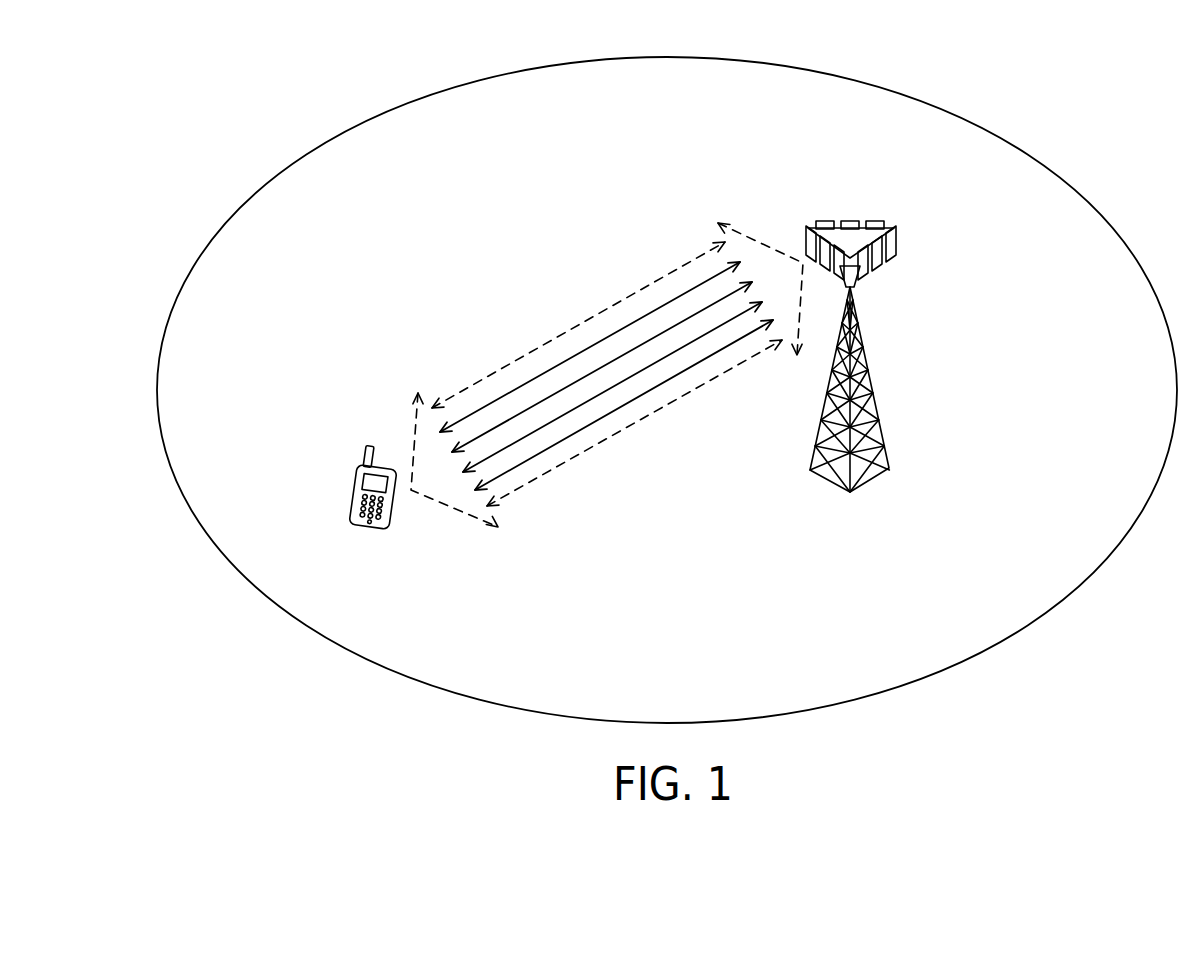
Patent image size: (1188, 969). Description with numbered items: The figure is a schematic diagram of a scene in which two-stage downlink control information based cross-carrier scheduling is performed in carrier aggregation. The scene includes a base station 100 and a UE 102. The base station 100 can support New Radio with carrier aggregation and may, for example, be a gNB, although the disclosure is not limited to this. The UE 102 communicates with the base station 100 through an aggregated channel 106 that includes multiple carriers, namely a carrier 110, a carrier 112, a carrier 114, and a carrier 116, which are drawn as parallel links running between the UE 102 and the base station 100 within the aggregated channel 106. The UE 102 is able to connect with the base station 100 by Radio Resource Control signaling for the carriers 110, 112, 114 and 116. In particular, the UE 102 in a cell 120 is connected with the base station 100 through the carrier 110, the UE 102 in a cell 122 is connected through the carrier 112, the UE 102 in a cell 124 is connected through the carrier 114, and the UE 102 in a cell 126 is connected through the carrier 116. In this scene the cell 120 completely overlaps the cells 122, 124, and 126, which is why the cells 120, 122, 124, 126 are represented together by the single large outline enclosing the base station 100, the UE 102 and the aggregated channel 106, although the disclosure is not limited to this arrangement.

The base station 100 is at (850, 222).
The UE 102 is at (352, 492).
The aggregated channel 106 is at (470, 388).
The carrier 110 is at (707, 278).
The carrier 112 is at (672, 327).
The carrier 114 is at (628, 370).
The carrier 116 is at (555, 370).
The cell 120 is at (667, 371).
The cell 122 is at (667, 390).
The cell 124 is at (667, 390).
The cell 126 is at (667, 55).